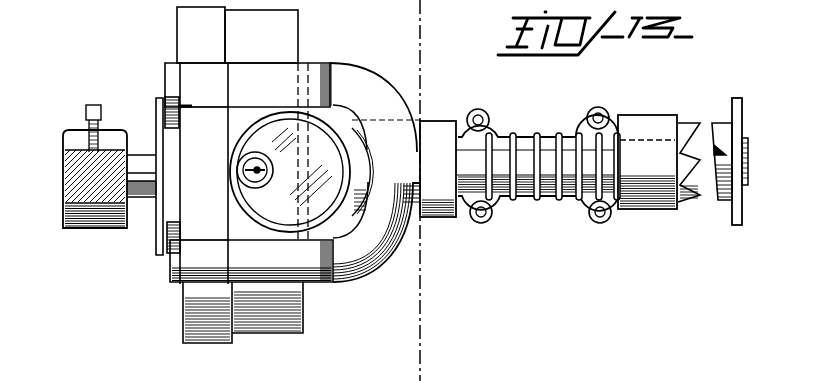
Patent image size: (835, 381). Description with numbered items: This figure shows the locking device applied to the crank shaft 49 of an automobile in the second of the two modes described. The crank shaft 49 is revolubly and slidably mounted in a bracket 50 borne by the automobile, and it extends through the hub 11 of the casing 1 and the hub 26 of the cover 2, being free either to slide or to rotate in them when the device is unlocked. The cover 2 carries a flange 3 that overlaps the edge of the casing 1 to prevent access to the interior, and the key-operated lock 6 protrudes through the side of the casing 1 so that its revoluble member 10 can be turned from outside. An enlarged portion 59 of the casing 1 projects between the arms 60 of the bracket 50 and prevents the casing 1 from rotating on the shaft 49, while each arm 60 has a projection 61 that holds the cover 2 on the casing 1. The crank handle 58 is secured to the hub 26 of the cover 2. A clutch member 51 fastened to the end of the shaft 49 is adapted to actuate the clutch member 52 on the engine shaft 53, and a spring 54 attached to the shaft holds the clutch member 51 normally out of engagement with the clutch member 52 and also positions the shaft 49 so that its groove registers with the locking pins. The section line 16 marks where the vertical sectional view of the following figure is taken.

The casing 1 is at (266, 125).
The cover 2 is at (176, 40).
The flange 3 is at (210, 343).
The lock 6 is at (301, 172).
The revoluble member 10 is at (262, 184).
The hub 11 is at (356, 126).
The section line 16 is at (421, 10).
The hub 26 is at (165, 210).
The crank shaft 49 is at (472, 200).
The bracket 50 is at (492, 137).
The clutch member 51 is at (683, 128).
The clutch member 52 is at (727, 125).
The shaft 53 is at (730, 200).
The spring 54 is at (558, 200).
The crank handle 58 is at (78, 228).
The enlarged portion 59 is at (338, 127).
The arms 60 is at (249, 173).
The projection 61 is at (168, 118).